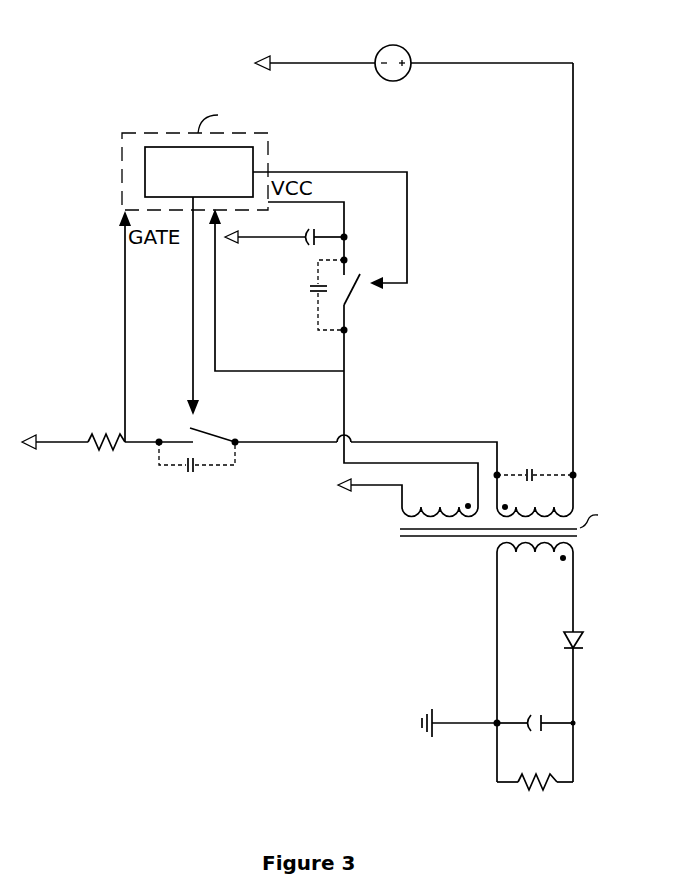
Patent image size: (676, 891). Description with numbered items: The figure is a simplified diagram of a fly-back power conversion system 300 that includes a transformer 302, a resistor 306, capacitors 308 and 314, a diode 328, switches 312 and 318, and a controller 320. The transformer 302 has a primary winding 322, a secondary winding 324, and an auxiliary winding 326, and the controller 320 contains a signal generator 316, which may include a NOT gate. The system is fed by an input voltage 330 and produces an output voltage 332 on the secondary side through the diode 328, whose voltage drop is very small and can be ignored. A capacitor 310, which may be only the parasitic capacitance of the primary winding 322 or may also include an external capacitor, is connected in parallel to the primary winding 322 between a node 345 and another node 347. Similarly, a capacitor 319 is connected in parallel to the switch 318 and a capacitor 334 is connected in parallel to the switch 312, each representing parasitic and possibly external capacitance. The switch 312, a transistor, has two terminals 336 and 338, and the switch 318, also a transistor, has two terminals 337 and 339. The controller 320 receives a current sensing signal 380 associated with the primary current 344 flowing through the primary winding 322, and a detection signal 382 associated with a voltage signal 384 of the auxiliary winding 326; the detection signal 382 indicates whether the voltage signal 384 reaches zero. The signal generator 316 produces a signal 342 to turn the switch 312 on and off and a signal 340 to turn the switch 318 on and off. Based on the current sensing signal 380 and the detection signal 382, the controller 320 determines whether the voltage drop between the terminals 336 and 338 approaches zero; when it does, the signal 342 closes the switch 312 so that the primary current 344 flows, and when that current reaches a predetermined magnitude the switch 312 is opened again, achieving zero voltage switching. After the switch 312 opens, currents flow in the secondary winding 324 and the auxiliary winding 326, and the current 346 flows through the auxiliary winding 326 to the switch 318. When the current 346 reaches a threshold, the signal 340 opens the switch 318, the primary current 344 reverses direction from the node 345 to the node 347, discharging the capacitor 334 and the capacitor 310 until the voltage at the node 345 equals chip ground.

The power conversion system 300 is at (62, 707).
The transformer 302 is at (580, 537).
The resistor 306 is at (105, 450).
The capacitor 308 is at (309, 247).
The capacitor 310 is at (534, 468).
The switch 312 is at (218, 436).
The capacitor 314 is at (542, 714).
The signal generator 316 is at (253, 158).
The switch 318 is at (346, 302).
The capacitor 319 is at (314, 296).
The controller 320 is at (122, 158).
The primary winding 322 is at (575, 508).
The secondary winding 324 is at (576, 552).
The auxiliary winding 326 is at (401, 519).
The diode 328 is at (583, 640).
The input voltage 330 is at (409, 57).
The output voltage 332 is at (573, 765).
The capacitor 334 is at (188, 472).
The terminal 336 is at (237, 444).
The terminal 337 is at (347, 259).
The terminal 338 is at (159, 439).
The terminal 339 is at (341, 333).
The signal 340 is at (407, 266).
The signal 342 is at (192, 372).
The primary current 344 is at (412, 442).
The node 345 is at (497, 472).
The current 346 is at (345, 386).
The node 347 is at (575, 474).
The current sensing signal 380 is at (125, 336).
The detection signal 382 is at (215, 347).
The voltage signal 384 is at (448, 464).